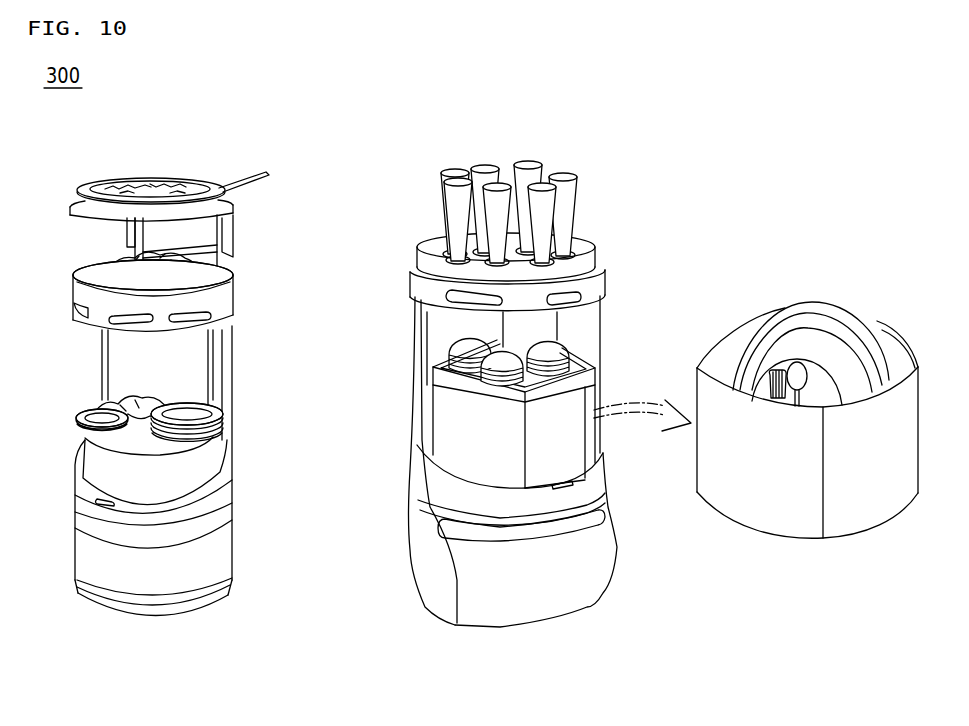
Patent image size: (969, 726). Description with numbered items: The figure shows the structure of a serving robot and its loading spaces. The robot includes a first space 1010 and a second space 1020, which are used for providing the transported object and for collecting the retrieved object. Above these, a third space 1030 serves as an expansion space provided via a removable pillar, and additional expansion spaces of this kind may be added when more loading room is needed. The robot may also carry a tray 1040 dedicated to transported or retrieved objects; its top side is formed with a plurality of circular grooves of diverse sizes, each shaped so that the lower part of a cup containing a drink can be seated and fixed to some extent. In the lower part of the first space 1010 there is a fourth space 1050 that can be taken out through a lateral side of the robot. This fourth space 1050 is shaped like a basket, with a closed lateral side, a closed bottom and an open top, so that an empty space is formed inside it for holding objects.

The first space 1010 is at (212, 443).
The second space 1020 is at (228, 303).
The third space 1030 is at (229, 203).
The tray 1040 is at (418, 256).
The fourth space 1050 is at (452, 428).